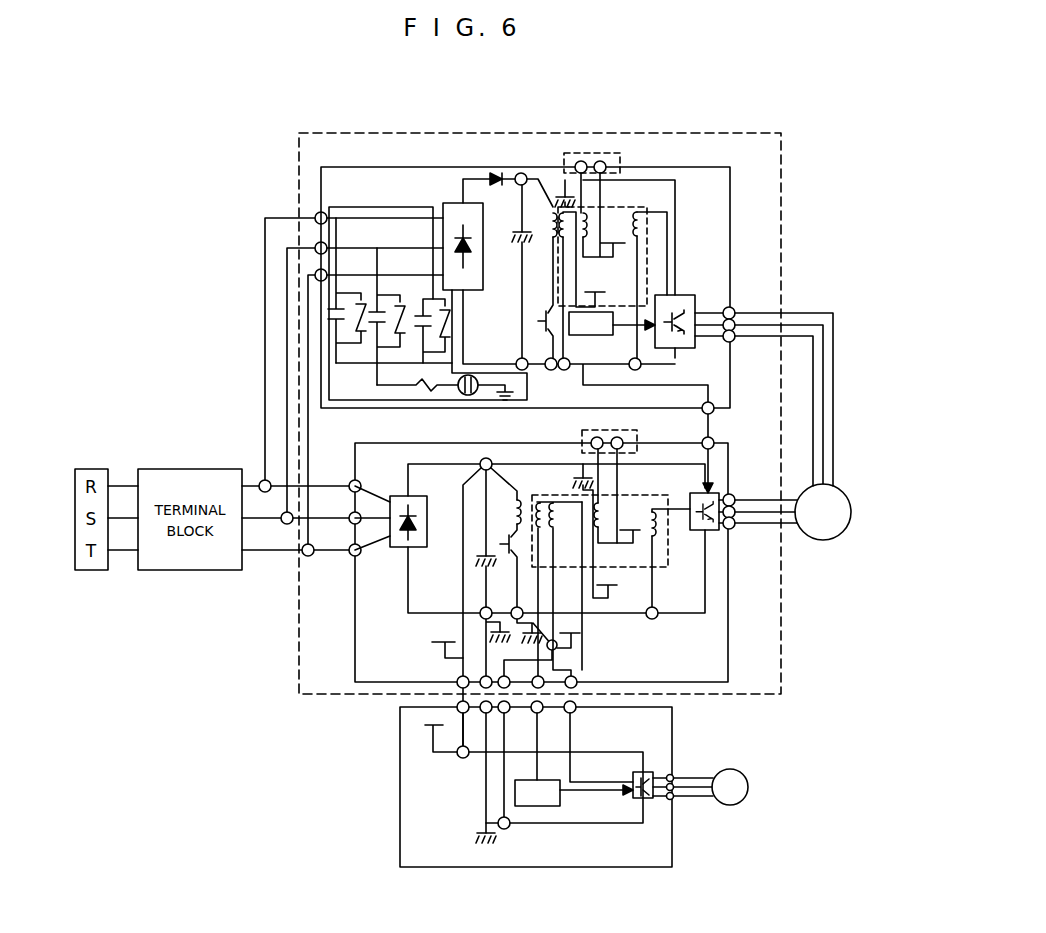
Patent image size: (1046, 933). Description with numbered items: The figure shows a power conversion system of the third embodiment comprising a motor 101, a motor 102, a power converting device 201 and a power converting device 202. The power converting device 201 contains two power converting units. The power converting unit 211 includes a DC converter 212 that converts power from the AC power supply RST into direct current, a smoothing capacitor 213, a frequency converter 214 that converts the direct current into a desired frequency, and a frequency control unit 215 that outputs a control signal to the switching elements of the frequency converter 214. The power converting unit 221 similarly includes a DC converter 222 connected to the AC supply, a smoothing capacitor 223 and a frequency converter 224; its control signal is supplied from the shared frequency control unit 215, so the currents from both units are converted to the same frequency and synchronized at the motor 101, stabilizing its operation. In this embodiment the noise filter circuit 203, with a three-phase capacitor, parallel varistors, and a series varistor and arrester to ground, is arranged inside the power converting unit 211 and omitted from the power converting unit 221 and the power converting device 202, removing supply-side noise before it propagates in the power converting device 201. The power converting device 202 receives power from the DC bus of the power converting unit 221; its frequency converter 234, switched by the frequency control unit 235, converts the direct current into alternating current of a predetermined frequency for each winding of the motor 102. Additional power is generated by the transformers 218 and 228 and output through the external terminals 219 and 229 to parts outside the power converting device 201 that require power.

The motor 101 is at (822, 541).
The motor 102 is at (730, 805).
The power converting device 201 is at (323, 696).
The power converting device 202 is at (400, 806).
The noise filter circuit 203 is at (368, 198).
The power converting unit 211 is at (731, 366).
The DC converter 212 is at (443, 207).
The smoothing capacitor 213 is at (519, 249).
The frequency converter 214 is at (677, 295).
The frequency control unit 215 is at (596, 336).
The transformer 218 is at (647, 229).
The external terminal 219 is at (621, 160).
The power converting unit 221 is at (356, 640).
The DC converter 222 is at (397, 548).
The smoothing capacitor 223 is at (475, 565).
The frequency converter 224 is at (695, 531).
The transformer 228 is at (638, 570).
The external terminal 229 is at (637, 438).
The frequency converter 234 is at (650, 772).
The frequency control unit 235 is at (560, 800).